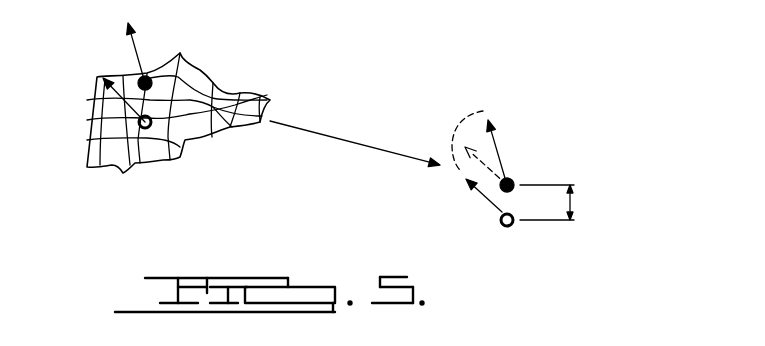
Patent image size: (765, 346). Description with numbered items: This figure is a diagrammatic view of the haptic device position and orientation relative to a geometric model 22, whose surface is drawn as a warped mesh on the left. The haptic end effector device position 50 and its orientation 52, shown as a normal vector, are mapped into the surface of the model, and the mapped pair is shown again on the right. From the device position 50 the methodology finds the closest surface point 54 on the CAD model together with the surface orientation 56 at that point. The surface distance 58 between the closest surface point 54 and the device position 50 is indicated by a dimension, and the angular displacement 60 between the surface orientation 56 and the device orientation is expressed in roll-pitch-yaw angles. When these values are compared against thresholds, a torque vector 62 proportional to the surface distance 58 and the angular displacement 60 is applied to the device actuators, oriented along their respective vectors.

The geometric model 22 is at (172, 160).
The haptic end effector device position 50 is at (150, 77).
The haptic end effector device orientation 52 is at (127, 40).
The closest surface point 54 is at (138, 122).
The surface orientation 56 is at (103, 80).
The surface distance 58 is at (570, 203).
The angular displacement 60 is at (465, 120).
The torque vector 62 is at (460, 170).